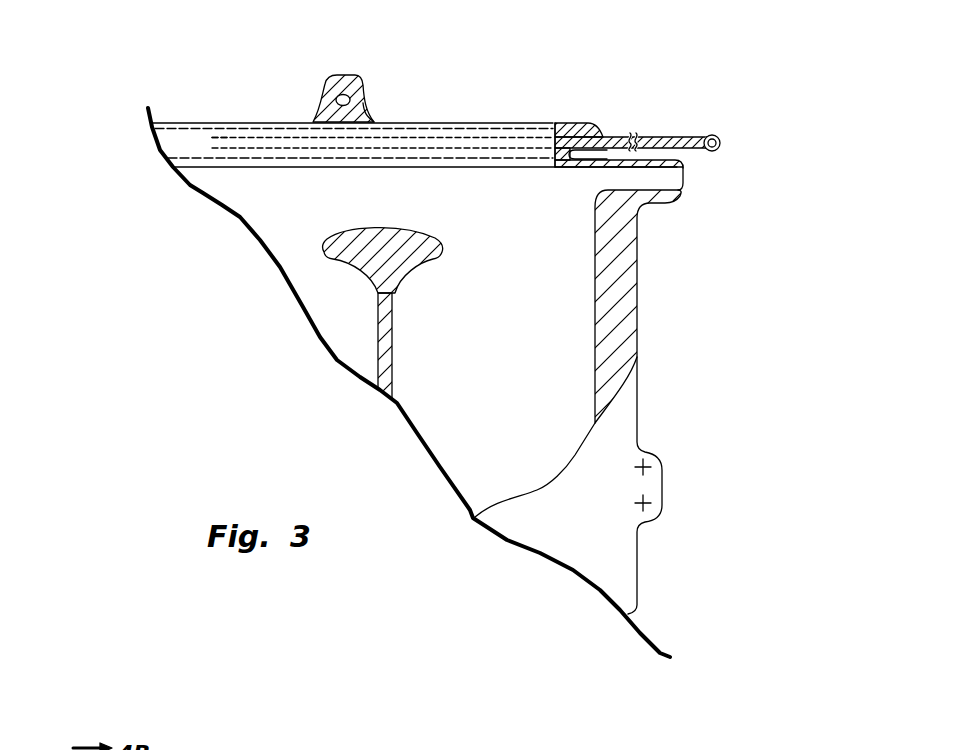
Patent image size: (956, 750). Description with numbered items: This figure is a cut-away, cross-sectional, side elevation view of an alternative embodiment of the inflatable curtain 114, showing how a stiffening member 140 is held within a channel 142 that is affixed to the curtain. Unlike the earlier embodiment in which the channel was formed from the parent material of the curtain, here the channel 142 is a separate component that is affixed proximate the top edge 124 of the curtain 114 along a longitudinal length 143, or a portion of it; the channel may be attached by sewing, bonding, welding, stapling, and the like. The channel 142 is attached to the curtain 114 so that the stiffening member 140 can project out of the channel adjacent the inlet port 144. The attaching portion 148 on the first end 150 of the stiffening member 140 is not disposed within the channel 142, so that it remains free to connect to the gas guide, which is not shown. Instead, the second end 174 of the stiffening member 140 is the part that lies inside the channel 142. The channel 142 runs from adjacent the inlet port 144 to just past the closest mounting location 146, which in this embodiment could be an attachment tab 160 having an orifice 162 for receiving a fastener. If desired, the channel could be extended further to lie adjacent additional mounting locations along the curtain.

The inflatable curtain 114 is at (669, 383).
The top edge 124 is at (428, 122).
The longitudinal length 143 is at (354, 112).
The channel 142 is at (181, 130).
The second end 174 is at (209, 145).
The attachment tab 160 is at (333, 82).
The orifice 162 is at (336, 98).
The closest mounting location 146 is at (367, 118).
The stiffening member 140 is at (620, 137).
The attaching portion 148 is at (714, 134).
The first end 150 is at (722, 144).
The inlet port 144 is at (680, 185).